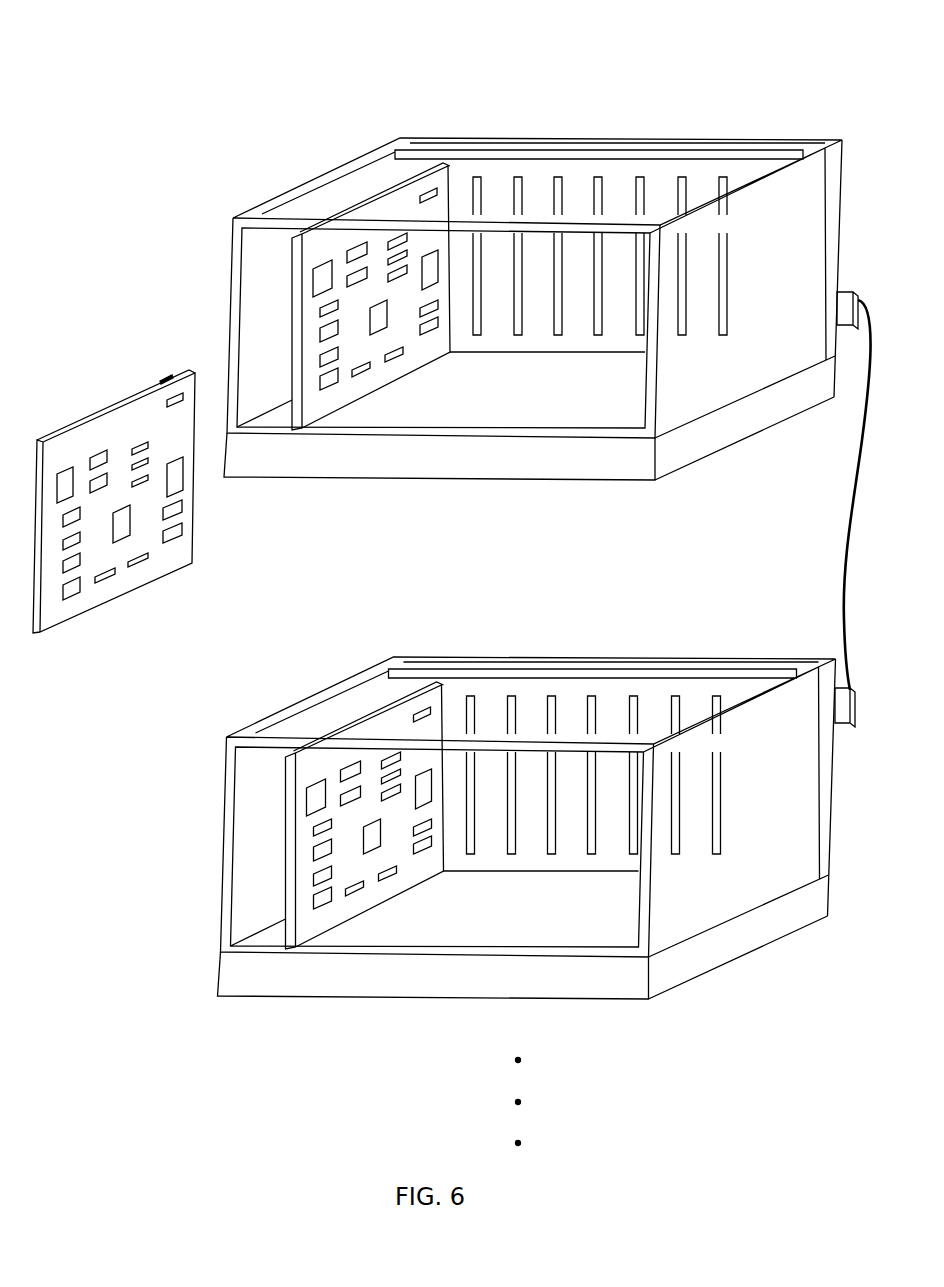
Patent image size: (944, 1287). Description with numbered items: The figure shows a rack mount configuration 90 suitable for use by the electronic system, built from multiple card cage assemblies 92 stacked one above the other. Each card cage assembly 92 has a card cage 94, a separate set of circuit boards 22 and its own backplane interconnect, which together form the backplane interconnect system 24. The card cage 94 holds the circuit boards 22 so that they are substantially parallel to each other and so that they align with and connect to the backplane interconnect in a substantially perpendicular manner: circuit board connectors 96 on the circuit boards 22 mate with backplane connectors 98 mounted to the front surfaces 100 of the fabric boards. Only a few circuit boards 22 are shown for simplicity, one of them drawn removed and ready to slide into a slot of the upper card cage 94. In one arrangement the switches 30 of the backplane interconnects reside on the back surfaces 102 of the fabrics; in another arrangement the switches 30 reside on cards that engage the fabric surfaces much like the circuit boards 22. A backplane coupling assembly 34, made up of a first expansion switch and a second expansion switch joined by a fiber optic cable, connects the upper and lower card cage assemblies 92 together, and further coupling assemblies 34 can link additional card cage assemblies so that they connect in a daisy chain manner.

The rack mount configuration 90 is at (85, 148).
The card cage assemblies 92 is at (120, 290).
The card cage 94 is at (300, 188).
The circuit board connectors 96 is at (167, 375).
The backplane connectors 98 is at (522, 337).
The front surfaces 100 is at (467, 170).
The back surfaces 102 is at (588, 113).
The circuit boards 22 is at (130, 588).
The backplane interconnect system 24 is at (703, 448).
The switches 30 is at (648, 123).
The backplane coupling assembly 34 is at (806, 500).